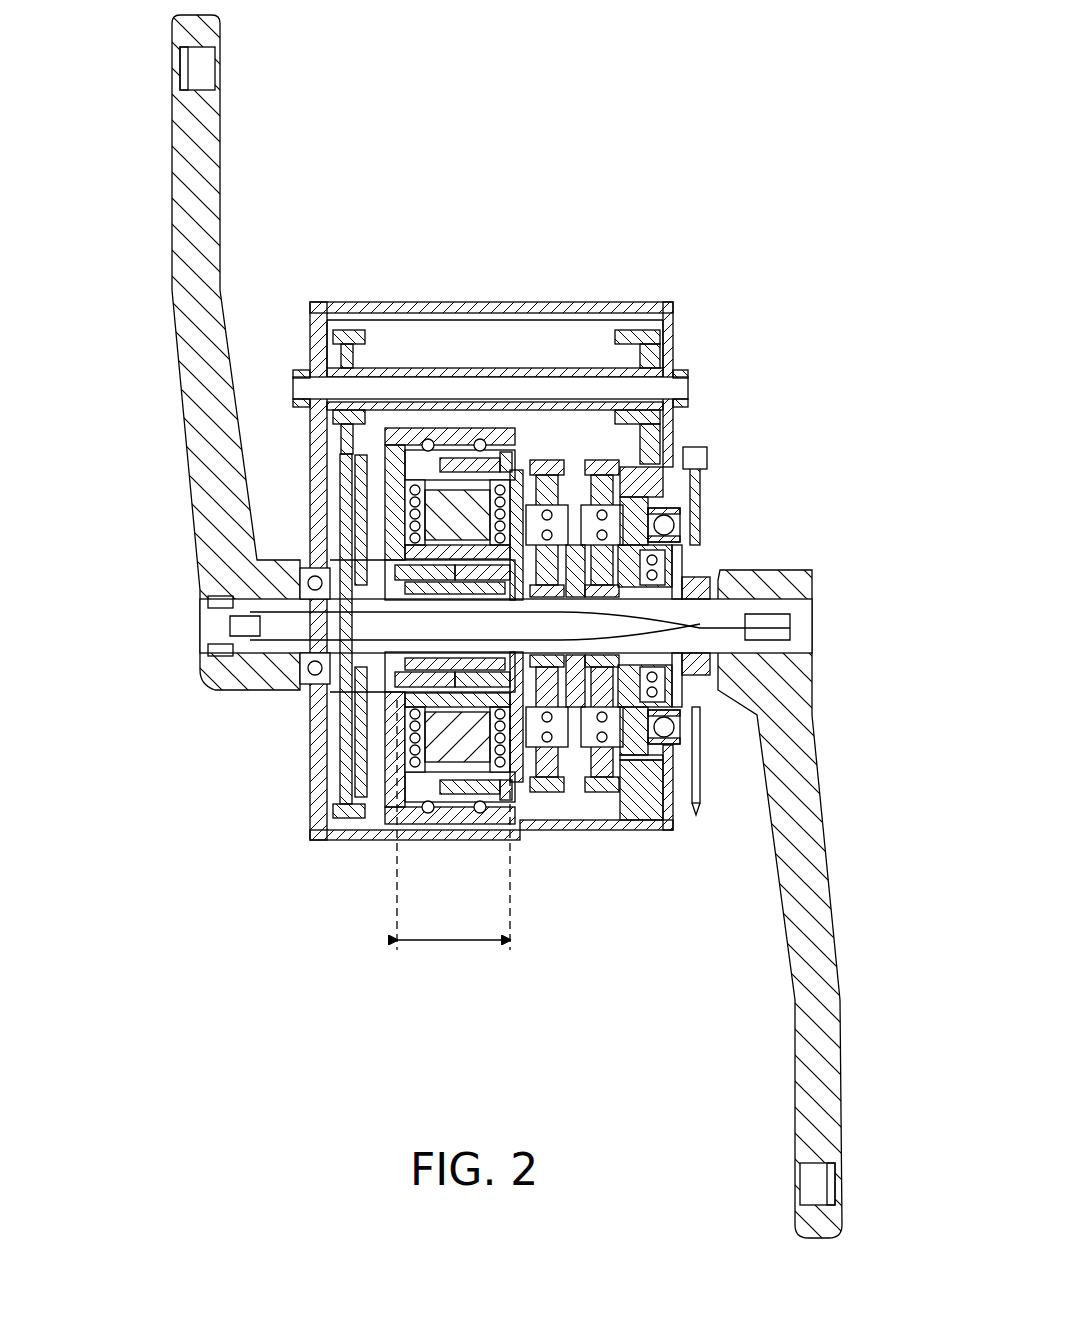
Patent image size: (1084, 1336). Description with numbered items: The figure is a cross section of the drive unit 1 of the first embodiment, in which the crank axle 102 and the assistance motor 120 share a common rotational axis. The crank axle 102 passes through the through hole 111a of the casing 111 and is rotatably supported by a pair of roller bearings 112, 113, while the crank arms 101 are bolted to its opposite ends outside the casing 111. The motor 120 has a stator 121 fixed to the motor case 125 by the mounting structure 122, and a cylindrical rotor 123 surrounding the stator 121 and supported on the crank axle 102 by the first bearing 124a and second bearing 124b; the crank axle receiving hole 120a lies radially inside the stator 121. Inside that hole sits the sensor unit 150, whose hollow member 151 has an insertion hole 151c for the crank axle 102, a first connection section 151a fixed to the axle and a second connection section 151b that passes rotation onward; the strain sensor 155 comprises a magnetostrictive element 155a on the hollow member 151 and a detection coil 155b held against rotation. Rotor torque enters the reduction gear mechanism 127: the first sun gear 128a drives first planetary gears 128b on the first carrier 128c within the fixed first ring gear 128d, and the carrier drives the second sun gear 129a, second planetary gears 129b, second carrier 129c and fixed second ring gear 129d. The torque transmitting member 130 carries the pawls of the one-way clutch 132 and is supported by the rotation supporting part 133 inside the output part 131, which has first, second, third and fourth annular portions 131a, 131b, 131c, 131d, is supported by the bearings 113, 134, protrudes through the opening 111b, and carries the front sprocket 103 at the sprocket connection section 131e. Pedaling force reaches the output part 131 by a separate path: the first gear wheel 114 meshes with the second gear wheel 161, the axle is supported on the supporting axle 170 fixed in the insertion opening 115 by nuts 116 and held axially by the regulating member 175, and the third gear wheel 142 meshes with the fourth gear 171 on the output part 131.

The drive unit 1 is at (568, 205).
The crank arm 101 is at (190, 170).
The crank axle 102 is at (812, 626).
The front sprocket 103 is at (700, 760).
The casing 111 is at (310, 800).
The through hole 111a is at (310, 596).
The opening 111b is at (690, 520).
The roller bearing 112 is at (330, 560).
The bearing 113 is at (745, 600).
The first gear wheel 114 is at (345, 480).
The insertion opening 115 is at (330, 400).
The nut 116 is at (300, 372).
The assistance motor 120 is at (512, 905).
The crank axle receiving hole 120a is at (482, 575).
The stator 121 is at (470, 810).
The mounting structure 122 is at (380, 810).
The rotor 123 is at (453, 825).
The first bearing 124a is at (430, 445).
The second bearing 124b is at (482, 445).
The motor case 125 is at (390, 470).
The reduction gear mechanism 127 is at (650, 440).
The first sun gear 128a is at (510, 652).
The first planetary gear 128b is at (590, 795).
The first carrier 128c is at (560, 770).
The first ring gear 128d is at (560, 800).
The second sun gear 129a is at (560, 655).
The second planetary gear 129b is at (620, 660).
The second carrier 129c is at (650, 770).
The second ring gear 129d is at (655, 820).
The torque transmitting member 130 is at (720, 676).
The output part 131 is at (690, 545).
The first annular portion 131a is at (705, 530).
The second annular portion 131b is at (705, 480).
The third annular portion 131c is at (705, 455).
The fourth annular portion 131d is at (715, 585).
The sprocket connection section 131e is at (705, 560).
The one-way clutch 132 is at (690, 575).
The rotation supporting part 133 is at (700, 745).
The bearing 134 is at (700, 500).
The third gear wheel 142 is at (625, 370).
The sensor unit 150 is at (300, 572).
The hollow member 151 is at (325, 560).
The first connection section 151a is at (505, 700).
The second connection section 151b is at (235, 636).
The insertion hole 151c is at (245, 668).
The strain sensor 155 is at (285, 770).
The magnetostrictive element 155a is at (320, 696).
The detection coil 155b is at (318, 700).
The second gear wheel 161 is at (345, 412).
The supporting axle 170 is at (690, 400).
The fourth gear 171 is at (690, 410).
The regulating member 175 is at (310, 362).